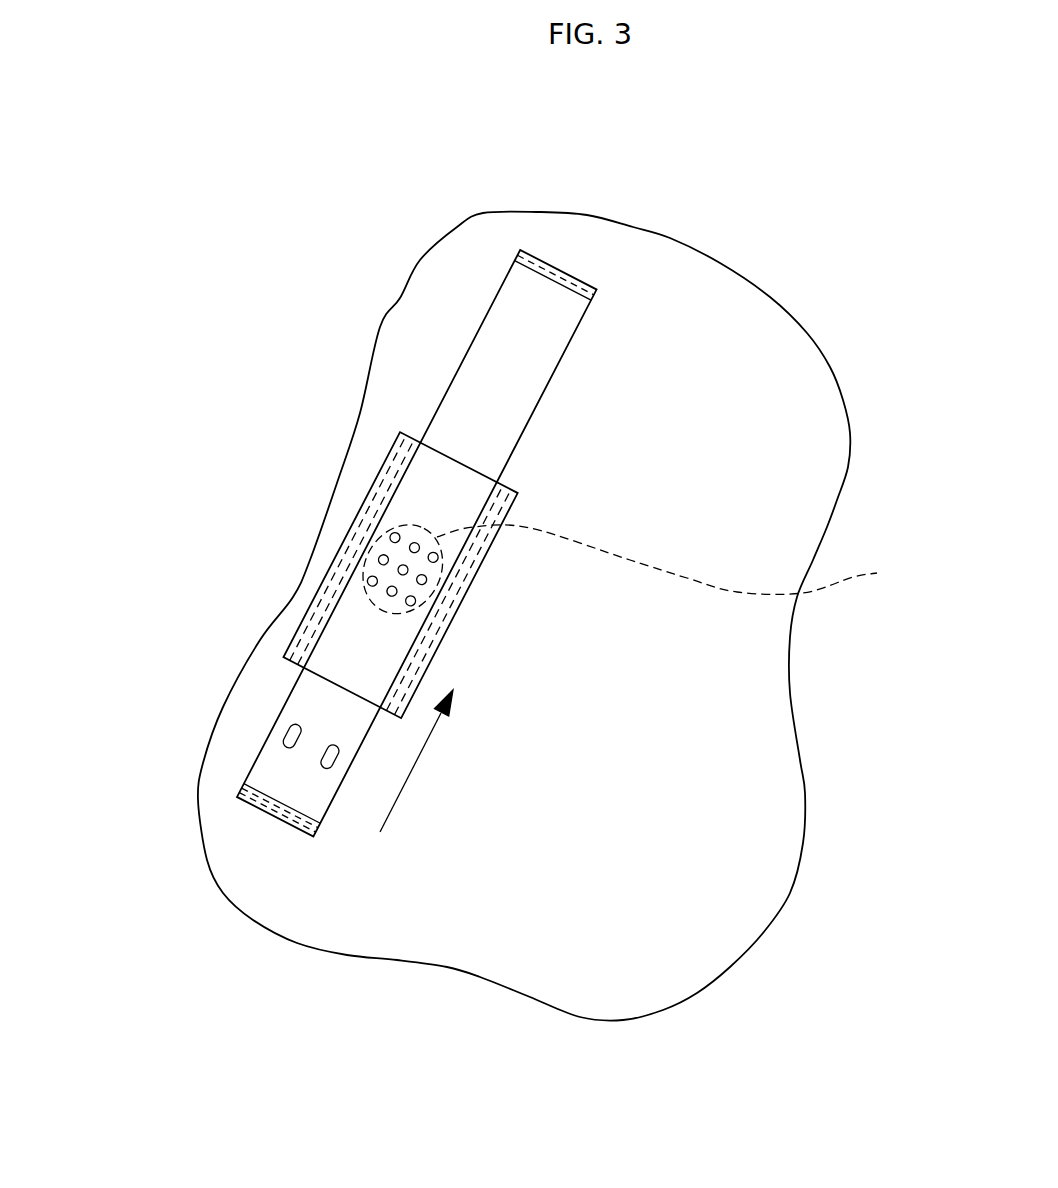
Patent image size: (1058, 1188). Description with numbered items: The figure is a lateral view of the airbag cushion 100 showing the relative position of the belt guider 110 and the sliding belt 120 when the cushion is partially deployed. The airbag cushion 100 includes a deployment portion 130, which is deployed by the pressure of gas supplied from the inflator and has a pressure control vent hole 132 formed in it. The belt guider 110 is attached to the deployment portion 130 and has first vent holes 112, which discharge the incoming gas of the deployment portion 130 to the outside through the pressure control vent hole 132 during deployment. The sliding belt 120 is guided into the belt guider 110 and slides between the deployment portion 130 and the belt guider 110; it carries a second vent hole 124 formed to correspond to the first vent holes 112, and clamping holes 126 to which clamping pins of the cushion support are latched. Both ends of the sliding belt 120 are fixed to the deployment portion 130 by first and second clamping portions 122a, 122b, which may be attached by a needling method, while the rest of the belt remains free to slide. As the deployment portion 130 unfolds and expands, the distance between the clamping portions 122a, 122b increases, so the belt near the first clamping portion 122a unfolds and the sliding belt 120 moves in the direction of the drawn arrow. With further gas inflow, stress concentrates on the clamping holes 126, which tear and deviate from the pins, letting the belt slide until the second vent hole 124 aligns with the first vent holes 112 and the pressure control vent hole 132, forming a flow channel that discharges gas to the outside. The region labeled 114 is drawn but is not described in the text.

The airbag cushion 100 is at (188, 327).
The belt guider 110 is at (443, 489).
The first vent holes 112 is at (403, 568).
The strap slots 114 is at (357, 522).
The sliding belt 120 is at (480, 371).
The first clamping portion 122a is at (245, 778).
The second clamping portion 122b is at (558, 275).
The second vent hole 124 is at (362, 603).
The clamping holes 126 is at (287, 737).
The deployment portion 130 is at (717, 423).
The pressure control vent hole 132 is at (687, 560).